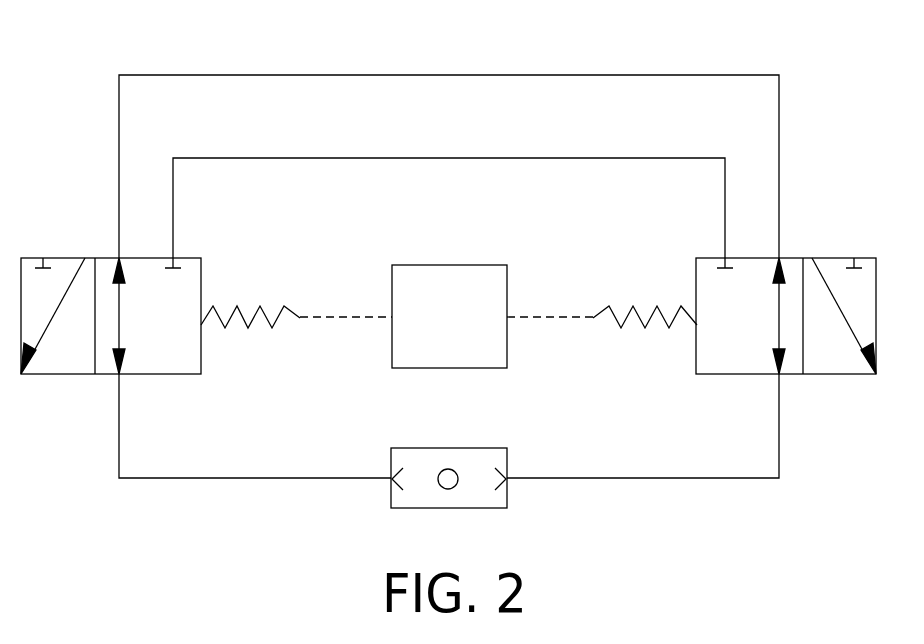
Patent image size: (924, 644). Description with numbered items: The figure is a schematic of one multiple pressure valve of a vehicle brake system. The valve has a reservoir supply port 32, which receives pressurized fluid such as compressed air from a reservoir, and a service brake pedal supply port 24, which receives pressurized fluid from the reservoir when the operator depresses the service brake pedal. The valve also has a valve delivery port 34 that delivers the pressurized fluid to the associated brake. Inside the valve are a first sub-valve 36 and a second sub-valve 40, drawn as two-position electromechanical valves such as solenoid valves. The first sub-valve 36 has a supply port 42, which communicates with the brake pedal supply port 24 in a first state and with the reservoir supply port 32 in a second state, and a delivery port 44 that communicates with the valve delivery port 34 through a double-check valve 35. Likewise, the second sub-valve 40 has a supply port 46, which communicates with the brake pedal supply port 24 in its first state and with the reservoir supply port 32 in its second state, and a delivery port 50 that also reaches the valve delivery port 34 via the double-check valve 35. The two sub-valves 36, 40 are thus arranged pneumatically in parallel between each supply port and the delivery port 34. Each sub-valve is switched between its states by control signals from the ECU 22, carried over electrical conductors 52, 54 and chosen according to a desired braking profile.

The ECU 22 is at (449, 316).
The service brake pedal supply port 24 is at (448, 75).
The reservoir supply port 32 is at (448, 158).
The valve delivery port 34 is at (483, 508).
The double-check valve 35 is at (488, 448).
The first sub-valve 36 is at (202, 262).
The second sub-valve 40 is at (835, 258).
The supply port 42 is at (118, 255).
The delivery port 44 is at (120, 374).
The supply port 46 is at (780, 258).
The delivery port 50 is at (780, 374).
The electrical conductor 52 is at (203, 325).
The electrical conductor 54 is at (696, 323).